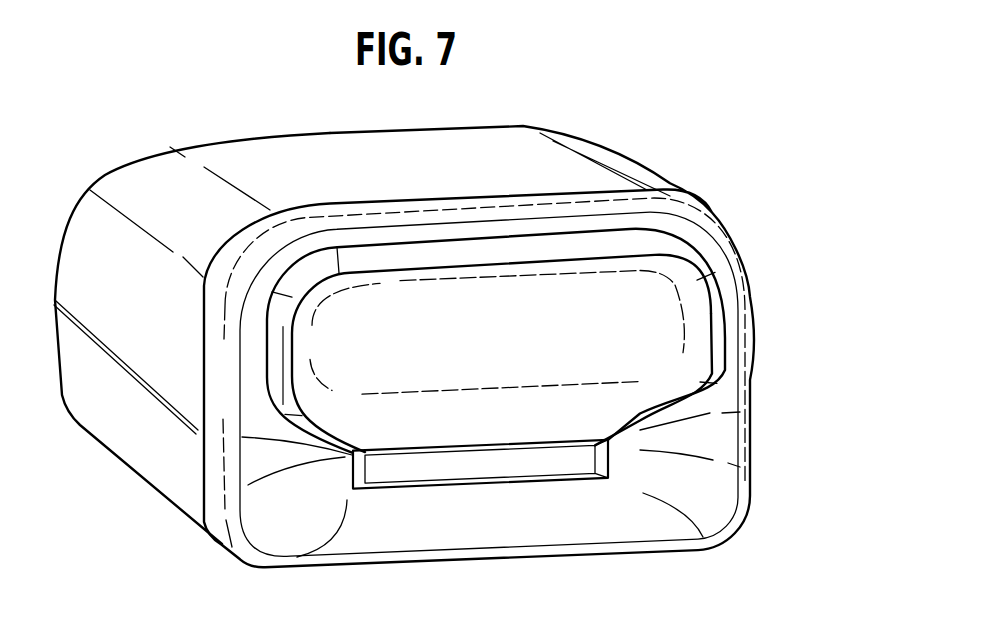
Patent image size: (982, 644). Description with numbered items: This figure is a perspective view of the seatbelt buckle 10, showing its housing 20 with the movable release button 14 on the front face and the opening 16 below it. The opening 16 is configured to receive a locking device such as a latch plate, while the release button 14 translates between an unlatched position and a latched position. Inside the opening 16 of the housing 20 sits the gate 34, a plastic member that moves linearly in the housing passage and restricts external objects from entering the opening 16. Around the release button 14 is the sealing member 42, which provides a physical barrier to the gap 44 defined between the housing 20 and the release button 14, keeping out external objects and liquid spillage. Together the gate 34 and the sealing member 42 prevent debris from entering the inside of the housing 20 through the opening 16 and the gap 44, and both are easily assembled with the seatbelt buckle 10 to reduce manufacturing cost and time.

The seatbelt buckle 10 is at (128, 100).
The release button 14 is at (668, 293).
The opening 16 is at (393, 496).
The housing 20 is at (563, 167).
The gate 34 is at (525, 467).
The sealing member 42 is at (637, 237).
The gap 44 is at (718, 342).